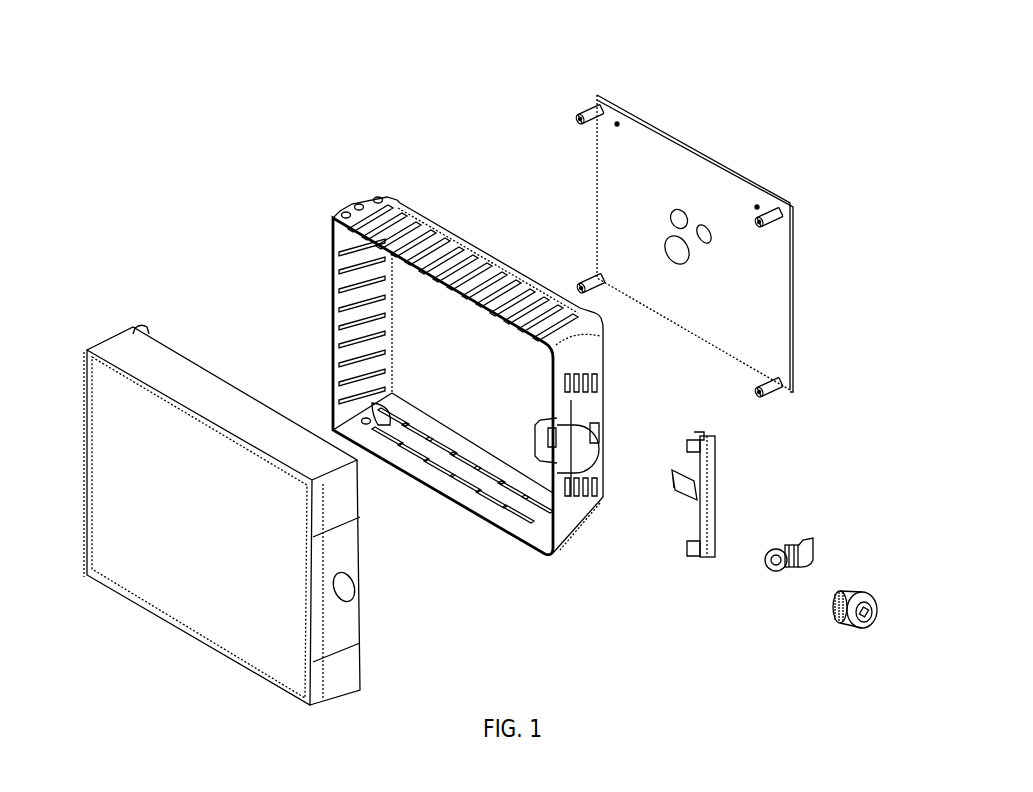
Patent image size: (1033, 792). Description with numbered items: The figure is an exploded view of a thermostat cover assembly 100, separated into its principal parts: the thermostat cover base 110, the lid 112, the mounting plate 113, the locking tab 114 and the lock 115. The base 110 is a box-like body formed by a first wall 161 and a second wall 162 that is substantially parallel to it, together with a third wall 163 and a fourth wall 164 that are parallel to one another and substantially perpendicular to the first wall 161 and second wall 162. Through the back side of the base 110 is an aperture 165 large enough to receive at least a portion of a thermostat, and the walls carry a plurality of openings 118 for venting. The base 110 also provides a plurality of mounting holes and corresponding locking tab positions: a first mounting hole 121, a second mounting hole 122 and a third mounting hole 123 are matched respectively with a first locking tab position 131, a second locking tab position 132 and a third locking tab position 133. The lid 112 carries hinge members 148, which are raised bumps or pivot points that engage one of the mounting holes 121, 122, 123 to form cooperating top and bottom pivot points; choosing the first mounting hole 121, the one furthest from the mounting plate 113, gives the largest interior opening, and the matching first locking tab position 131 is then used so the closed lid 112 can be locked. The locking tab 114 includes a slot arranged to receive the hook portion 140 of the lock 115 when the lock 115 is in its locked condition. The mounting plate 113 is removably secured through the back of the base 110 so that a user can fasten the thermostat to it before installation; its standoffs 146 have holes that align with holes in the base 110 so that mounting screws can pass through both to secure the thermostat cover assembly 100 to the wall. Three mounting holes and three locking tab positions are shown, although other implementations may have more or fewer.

The thermostat cover assembly 100 is at (236, 163).
The thermostat cover base 110 is at (305, 336).
The lid 112 is at (185, 336).
The mounting plate 113 is at (564, 149).
The locking tab 114 is at (681, 522).
The lock 115 is at (837, 623).
The openings 118 is at (485, 238).
The first mounting hole 121 is at (343, 214).
The second mounting hole 122 is at (358, 203).
The third mounting hole 123 is at (378, 197).
The first locking tab position 131 is at (562, 510).
The second locking tab position 132 is at (587, 500).
The third locking tab position 133 is at (600, 498).
The hook portion 140 is at (793, 545).
The standoffs 146 is at (590, 104).
The hinge members 148 is at (138, 325).
The first wall 161 is at (441, 209).
The second wall 162 is at (430, 512).
The third wall 163 is at (330, 300).
The fourth wall 164 is at (614, 411).
The aperture 165 is at (470, 391).